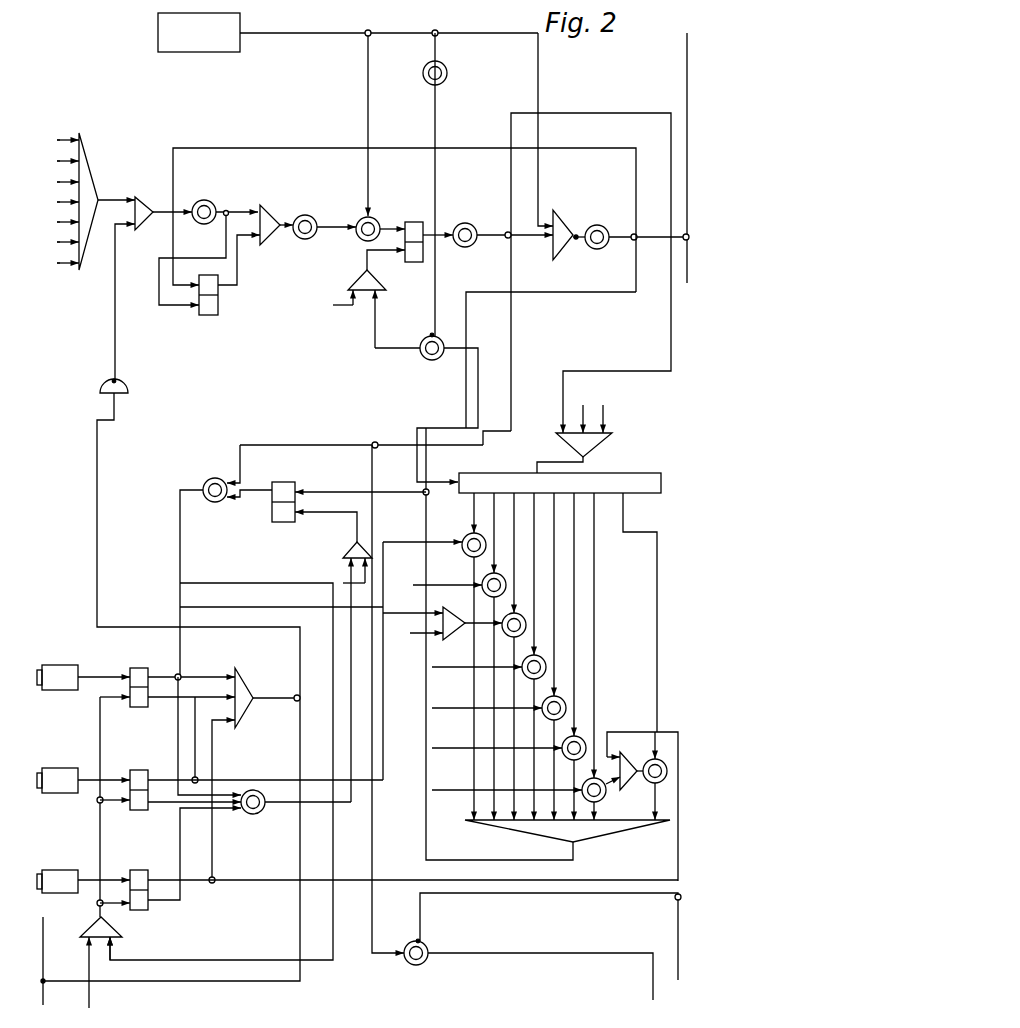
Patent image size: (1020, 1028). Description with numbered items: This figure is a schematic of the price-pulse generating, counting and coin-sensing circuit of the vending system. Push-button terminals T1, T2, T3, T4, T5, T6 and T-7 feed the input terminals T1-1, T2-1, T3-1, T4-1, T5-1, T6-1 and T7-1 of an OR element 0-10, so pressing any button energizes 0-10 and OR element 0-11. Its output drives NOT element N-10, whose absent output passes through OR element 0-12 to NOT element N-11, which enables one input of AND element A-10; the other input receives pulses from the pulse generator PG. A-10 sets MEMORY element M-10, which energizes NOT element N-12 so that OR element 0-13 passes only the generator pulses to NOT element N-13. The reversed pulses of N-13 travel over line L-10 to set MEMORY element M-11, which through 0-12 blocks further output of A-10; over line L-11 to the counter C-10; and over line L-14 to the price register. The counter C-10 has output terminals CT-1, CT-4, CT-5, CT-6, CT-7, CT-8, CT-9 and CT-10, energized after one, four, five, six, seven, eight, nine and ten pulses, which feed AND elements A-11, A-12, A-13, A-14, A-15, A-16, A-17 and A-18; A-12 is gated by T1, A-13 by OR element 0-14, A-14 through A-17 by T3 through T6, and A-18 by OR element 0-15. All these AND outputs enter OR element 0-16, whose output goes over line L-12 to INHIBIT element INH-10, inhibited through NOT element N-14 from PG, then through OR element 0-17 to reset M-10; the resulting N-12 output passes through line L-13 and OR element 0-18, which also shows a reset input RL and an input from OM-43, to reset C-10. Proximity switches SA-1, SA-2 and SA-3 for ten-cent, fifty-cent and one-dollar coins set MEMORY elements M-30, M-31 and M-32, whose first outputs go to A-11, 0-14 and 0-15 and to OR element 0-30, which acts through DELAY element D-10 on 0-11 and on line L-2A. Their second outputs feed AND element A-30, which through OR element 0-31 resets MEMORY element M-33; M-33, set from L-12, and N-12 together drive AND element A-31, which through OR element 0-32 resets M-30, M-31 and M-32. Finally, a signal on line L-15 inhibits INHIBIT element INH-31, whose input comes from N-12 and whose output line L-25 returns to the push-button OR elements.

The pulse generator PG is at (243, 33).
The NOT element N-14 is at (447, 68).
The line L-14 is at (687, 83).
The line L-10 is at (470, 140).
The line L-11 is at (567, 292).
The line L-13 is at (638, 355).
The OR element 0-10 is at (88, 185).
The input terminal T1-1 is at (62, 140).
The input terminal T2-1 is at (65, 161).
The input terminal T3-1 is at (70, 182).
The input terminal T4-1 is at (60, 202).
The input terminal T5-1 is at (60, 222).
The input terminal T6-1 is at (60, 242).
The input terminal T7-1 is at (55, 263).
The OR element 0-11 is at (152, 228).
The NOT element N-10 is at (212, 200).
The MEMORY element M-11 is at (218, 312).
The OR element 0-12 is at (280, 190).
The NOT element N-11 is at (300, 240).
The AND element A-10 is at (360, 218).
The MEMORY element M-10 is at (412, 220).
The NOT element N-12 is at (484, 208).
The OR element 0-13 is at (570, 244).
The NOT element N-13 is at (604, 225).
The OR element 0-17 is at (380, 290).
The reset line RL is at (89, 997).
The INHIBIT element INH-10 is at (428, 360).
The DELAY element D-10 is at (129, 392).
The OR element 0-18 is at (560, 448).
The input from OM-43 is at (606, 420).
The counter C-10 is at (655, 473).
The output terminal CT-1 is at (474, 498).
The output terminal CT-4 is at (494, 510).
The output terminal CT-5 is at (514, 512).
The output terminal CT-6 is at (534, 534).
The output terminal CT-7 is at (554, 558).
The output terminal CT-8 is at (574, 593).
The output terminal CT-9 is at (594, 618).
The output terminal CT-10 is at (657, 612).
The AND element A-11 is at (468, 553).
The AND element A-12 is at (490, 592).
The terminal T1 is at (435, 575).
The OR element 0-14 is at (447, 638).
The terminal T2 is at (416, 635).
The AND element A-13 is at (508, 638).
The terminal T3 is at (435, 667).
The AND element A-14 is at (546, 660).
The AND element A-15 is at (564, 700).
The terminal T4 is at (462, 710).
The AND element A-16 is at (584, 740).
The terminal T5 is at (462, 750).
The AND element A-17 is at (588, 802).
The terminal T6 is at (462, 792).
The OR element 0-15 is at (622, 752).
The terminal T-7 is at (608, 780).
The AND element A-18 is at (665, 790).
The OR element 0-16 is at (527, 830).
The line L-12 is at (423, 806).
The MEMORY element M-33 is at (283, 472).
The AND element A-31 is at (222, 502).
The OR element 0-31 is at (343, 551).
The proximity switch SA-1 is at (58, 655).
The MEMORY element M-30 is at (162, 655).
The OR element 0-30 is at (260, 655).
The proximity switch SA-2 is at (62, 756).
The MEMORY element M-31 is at (162, 757).
The AND element A-30 is at (250, 815).
The proximity switch SA-3 is at (65, 860).
The MEMORY element M-32 is at (160, 858).
The OR element 0-32 is at (110, 935).
The line L-2A is at (44, 995).
The line L-15 is at (678, 928).
The INHIBIT element INH-31 is at (414, 965).
The line L-25 is at (653, 984).